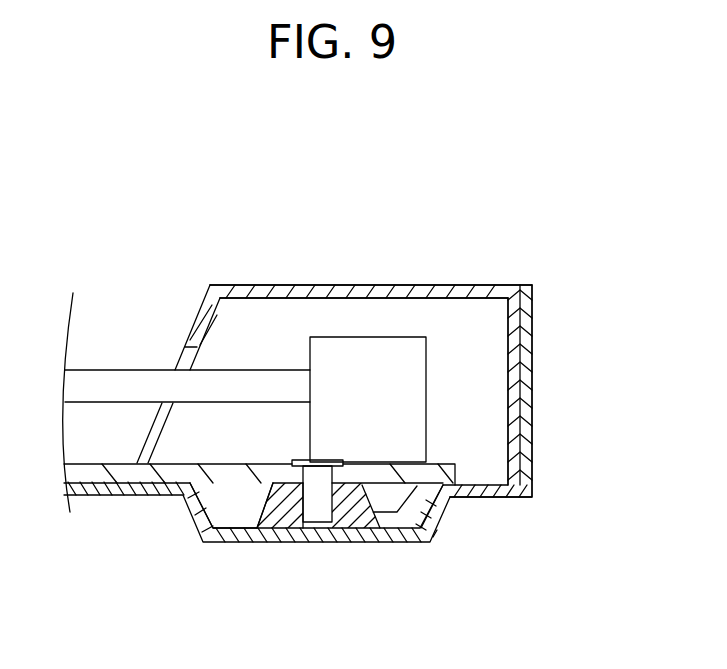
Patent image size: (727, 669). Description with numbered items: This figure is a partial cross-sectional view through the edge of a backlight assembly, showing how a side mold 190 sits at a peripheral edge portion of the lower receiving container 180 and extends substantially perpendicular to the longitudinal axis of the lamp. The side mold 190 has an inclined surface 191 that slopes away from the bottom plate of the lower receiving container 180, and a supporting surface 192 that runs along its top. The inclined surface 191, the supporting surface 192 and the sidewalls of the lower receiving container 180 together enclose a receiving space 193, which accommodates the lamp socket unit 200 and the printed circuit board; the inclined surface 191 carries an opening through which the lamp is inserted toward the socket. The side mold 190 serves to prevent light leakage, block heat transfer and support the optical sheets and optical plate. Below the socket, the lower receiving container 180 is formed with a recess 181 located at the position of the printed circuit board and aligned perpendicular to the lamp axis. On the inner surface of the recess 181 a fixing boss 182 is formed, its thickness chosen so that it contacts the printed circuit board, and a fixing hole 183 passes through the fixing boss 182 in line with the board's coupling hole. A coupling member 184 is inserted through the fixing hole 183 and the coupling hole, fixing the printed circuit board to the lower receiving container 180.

The side mold 190 is at (484, 255).
The inclined surface 191 is at (202, 313).
The supporting surface 192 is at (322, 287).
The receiving space 193 is at (470, 370).
The lower receiving container 180 is at (513, 414).
The recess 181 is at (227, 515).
The fixing boss 182 is at (272, 517).
The fixing hole 183 is at (342, 510).
The coupling member 184 is at (315, 524).
The lamp socket unit 200 is at (395, 336).